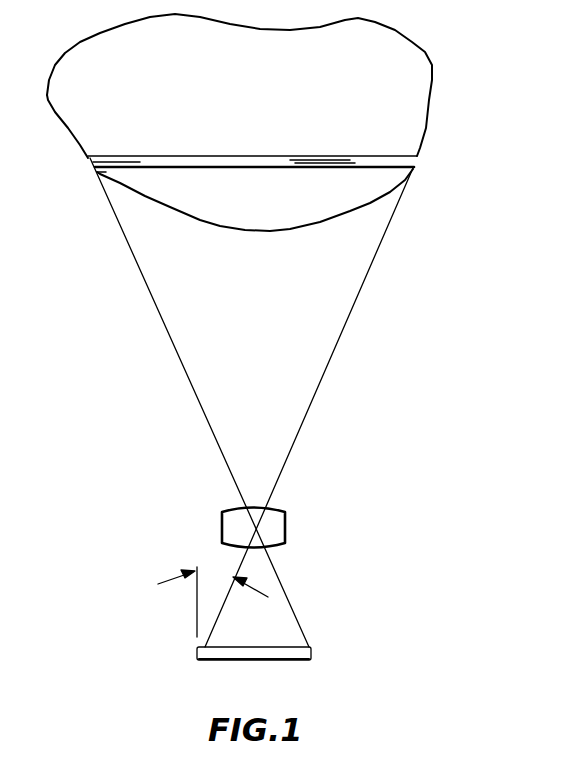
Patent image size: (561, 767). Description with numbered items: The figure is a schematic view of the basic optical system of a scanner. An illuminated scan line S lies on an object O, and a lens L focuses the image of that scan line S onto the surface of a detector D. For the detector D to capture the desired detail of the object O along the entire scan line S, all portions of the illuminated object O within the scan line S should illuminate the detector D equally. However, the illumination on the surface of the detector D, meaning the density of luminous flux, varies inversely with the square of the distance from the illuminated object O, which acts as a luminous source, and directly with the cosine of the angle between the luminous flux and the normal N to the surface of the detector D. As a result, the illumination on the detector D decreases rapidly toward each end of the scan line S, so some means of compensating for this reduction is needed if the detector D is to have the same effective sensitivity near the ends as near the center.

The object O is at (432, 78).
The scan line S is at (395, 153).
The lens L is at (287, 529).
The normal N is at (197, 611).
The detector D is at (290, 661).